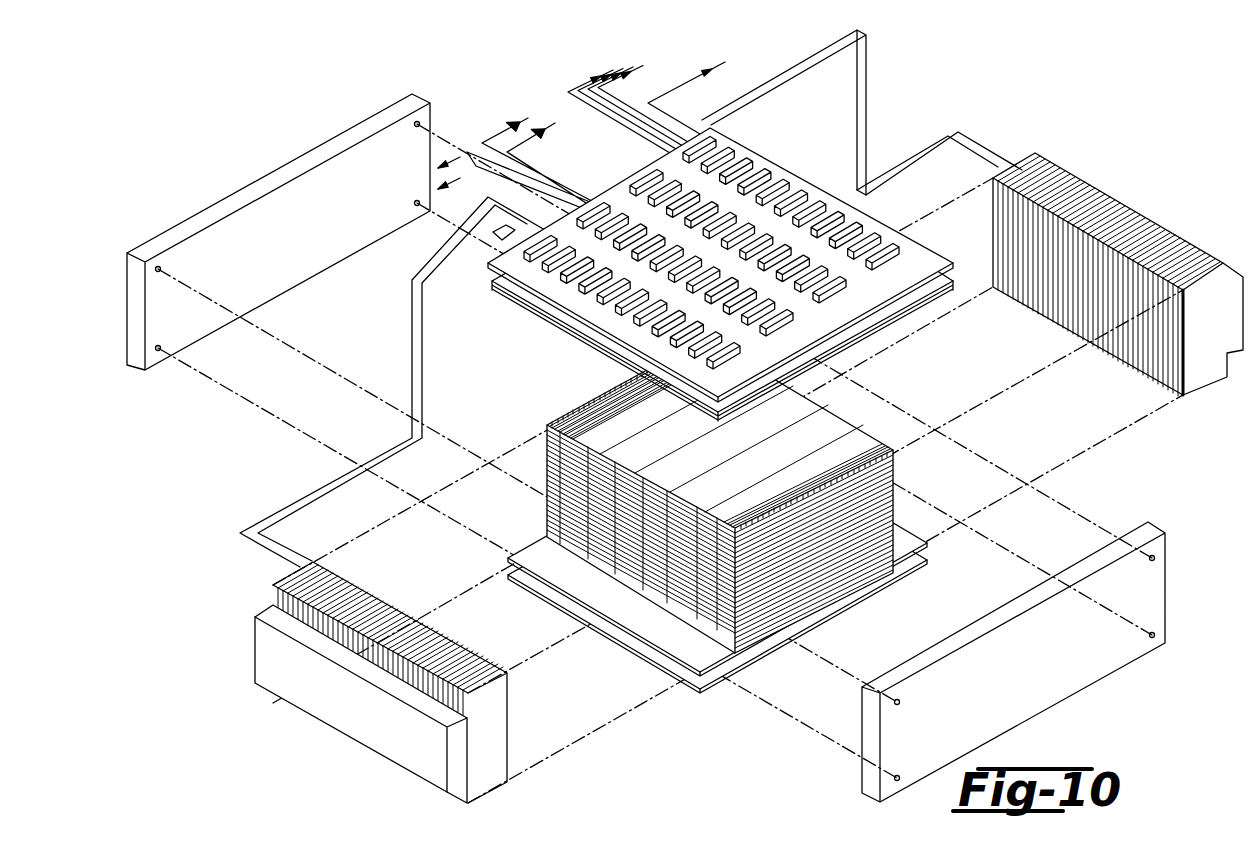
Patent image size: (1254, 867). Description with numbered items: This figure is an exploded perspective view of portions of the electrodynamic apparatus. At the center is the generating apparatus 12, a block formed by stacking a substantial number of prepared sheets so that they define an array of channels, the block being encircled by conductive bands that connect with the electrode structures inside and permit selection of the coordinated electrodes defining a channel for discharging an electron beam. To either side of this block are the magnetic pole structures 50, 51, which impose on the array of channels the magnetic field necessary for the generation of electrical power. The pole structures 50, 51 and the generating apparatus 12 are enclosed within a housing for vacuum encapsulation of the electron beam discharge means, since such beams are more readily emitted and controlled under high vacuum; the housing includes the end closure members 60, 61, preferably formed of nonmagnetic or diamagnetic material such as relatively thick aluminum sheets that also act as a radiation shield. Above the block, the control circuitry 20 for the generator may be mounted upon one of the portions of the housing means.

The generating apparatus 12 is at (581, 388).
The control circuitry 20 is at (818, 172).
The magnetic pole structure 50 is at (380, 602).
The magnetic pole structure 51 is at (1115, 200).
The end closure member 60 is at (192, 218).
The end closure member 61 is at (1040, 680).